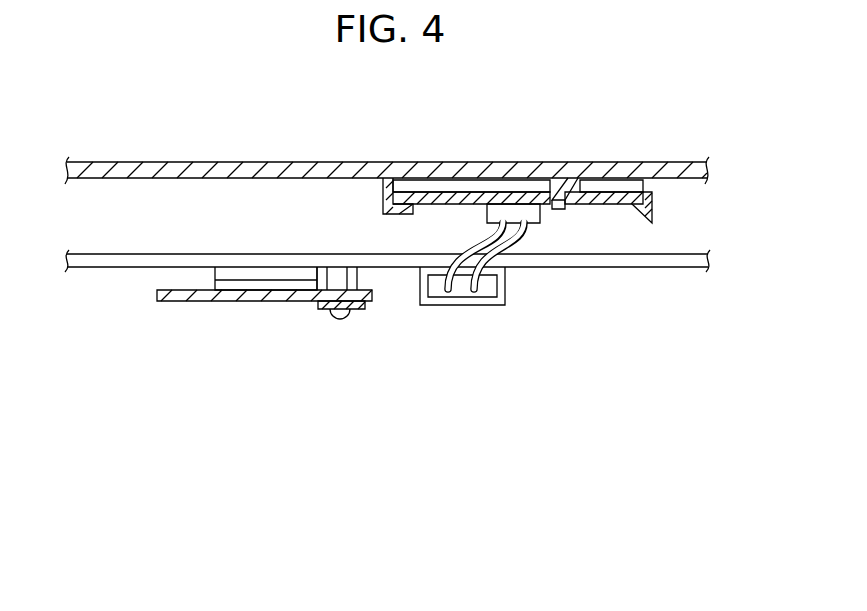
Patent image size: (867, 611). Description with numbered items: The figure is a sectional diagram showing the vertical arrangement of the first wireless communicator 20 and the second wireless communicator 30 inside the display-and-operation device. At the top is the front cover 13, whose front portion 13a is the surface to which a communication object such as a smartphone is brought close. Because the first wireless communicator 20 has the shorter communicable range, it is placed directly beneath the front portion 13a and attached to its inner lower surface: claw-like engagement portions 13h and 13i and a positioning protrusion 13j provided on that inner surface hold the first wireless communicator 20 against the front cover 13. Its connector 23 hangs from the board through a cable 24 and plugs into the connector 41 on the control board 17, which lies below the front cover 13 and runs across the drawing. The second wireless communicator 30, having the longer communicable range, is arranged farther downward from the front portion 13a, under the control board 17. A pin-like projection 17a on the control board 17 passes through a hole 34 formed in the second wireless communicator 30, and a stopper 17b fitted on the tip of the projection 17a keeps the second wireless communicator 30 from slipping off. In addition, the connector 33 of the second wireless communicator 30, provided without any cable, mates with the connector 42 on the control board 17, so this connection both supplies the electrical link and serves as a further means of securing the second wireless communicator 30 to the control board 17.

The front cover 13 is at (182, 161).
The front portion 13a is at (279, 168).
The claw-like engagement portion 13i is at (388, 190).
The positioning protrusion 13j is at (558, 188).
The claw-like engagement portion 13h is at (655, 205).
The first wireless communicator 20 is at (453, 191).
The control board 17 is at (621, 268).
The pin-like projection 17a is at (337, 319).
The stopper 17b is at (356, 311).
The connector 42 is at (252, 275).
The hole 34 is at (341, 296).
The connector 33 is at (258, 294).
The second wireless communicator 30 is at (218, 302).
The connector 23 is at (490, 287).
The cable 24 is at (519, 236).
The connector 41 is at (470, 306).